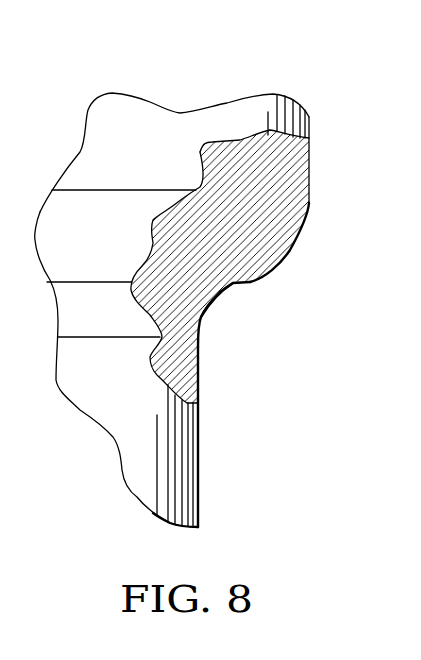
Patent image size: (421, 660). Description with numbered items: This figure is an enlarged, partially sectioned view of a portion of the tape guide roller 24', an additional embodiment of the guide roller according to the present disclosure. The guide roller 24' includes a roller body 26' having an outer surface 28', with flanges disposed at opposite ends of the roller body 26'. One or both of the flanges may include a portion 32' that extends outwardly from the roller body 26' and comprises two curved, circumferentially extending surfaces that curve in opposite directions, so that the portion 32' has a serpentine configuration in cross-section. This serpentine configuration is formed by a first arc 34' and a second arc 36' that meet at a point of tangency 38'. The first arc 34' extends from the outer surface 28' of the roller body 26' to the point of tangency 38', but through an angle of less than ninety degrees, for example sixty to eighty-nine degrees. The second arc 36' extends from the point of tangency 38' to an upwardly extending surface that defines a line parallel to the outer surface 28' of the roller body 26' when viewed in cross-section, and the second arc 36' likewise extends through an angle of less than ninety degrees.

The guide roller 24' is at (251, 226).
The roller body 26' is at (224, 538).
The outer surface 28' is at (240, 437).
The portion 32' is at (269, 320).
The first arc 34' is at (249, 338).
The second arc 36' is at (321, 242).
The point of tangency 38' is at (278, 303).